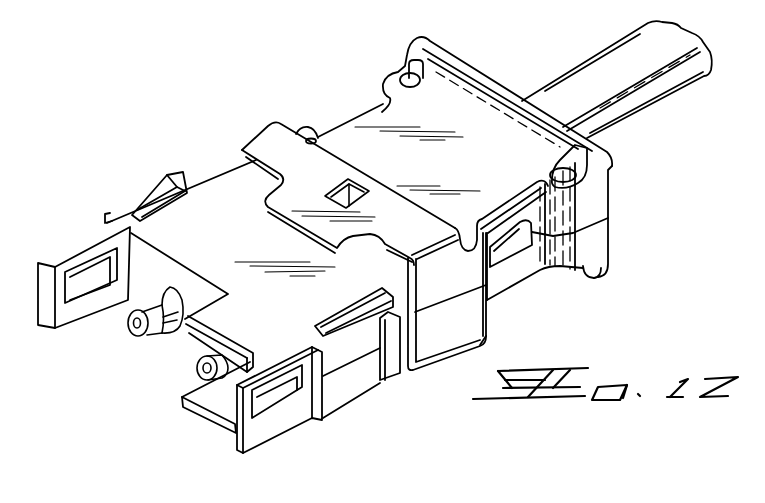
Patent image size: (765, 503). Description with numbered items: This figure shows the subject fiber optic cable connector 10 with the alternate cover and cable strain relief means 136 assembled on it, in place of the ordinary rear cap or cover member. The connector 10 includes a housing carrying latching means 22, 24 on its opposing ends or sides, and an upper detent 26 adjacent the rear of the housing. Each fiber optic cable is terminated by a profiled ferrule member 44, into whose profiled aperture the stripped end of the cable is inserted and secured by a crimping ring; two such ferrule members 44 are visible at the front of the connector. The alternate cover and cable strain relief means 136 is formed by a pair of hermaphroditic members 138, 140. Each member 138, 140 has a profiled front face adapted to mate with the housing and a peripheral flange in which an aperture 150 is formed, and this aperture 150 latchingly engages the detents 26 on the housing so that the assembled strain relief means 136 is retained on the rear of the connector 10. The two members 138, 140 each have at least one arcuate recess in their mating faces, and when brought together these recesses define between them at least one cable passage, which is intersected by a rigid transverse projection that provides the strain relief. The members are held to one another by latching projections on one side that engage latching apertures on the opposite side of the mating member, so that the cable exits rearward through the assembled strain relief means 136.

The fiber optic cable connector 10 is at (220, 181).
The latching means 22 is at (80, 246).
The latching means 24 is at (280, 420).
The upper detent 26 is at (335, 201).
The ferrule member 44 is at (197, 369).
The alternate cover and cable strain relief means 136 is at (525, 272).
The hermaphroditic member 138 is at (365, 111).
The hermaphroditic member 140 is at (486, 338).
The aperture 150 is at (340, 182).